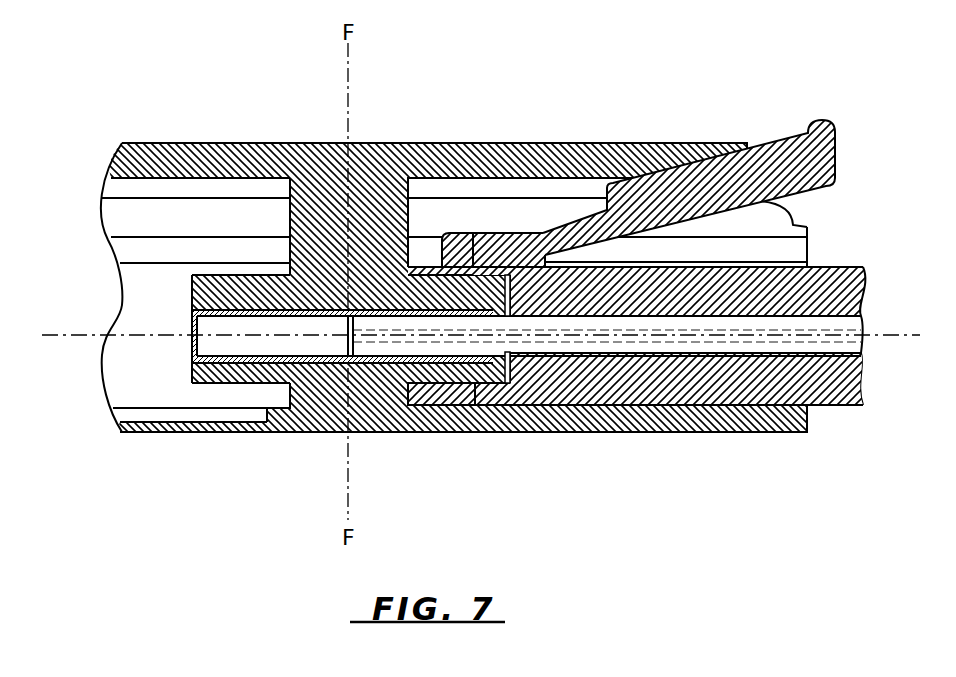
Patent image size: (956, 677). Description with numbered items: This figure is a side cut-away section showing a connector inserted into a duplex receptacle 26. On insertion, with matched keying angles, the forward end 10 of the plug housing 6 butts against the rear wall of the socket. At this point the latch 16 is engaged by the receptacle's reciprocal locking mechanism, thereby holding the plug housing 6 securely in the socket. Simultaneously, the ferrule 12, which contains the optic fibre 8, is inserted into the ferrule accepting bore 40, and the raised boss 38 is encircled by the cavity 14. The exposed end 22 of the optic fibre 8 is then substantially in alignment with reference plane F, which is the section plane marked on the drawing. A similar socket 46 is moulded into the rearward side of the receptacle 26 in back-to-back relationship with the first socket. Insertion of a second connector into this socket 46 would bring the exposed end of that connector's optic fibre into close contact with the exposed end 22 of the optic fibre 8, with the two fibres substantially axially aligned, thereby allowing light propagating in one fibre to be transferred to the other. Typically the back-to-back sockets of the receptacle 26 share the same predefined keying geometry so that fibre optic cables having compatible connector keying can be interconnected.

The plug housing 6 is at (777, 377).
The optic fibre 8 is at (860, 298).
The forward end 10 is at (408, 383).
The ferrule 12 is at (850, 347).
The cavity 14 is at (477, 383).
The latch 16 is at (763, 165).
The exposed end 22 is at (305, 143).
The duplex receptacle 26 is at (305, 460).
The raised boss 38 is at (473, 233).
The ferrule accepting bore 40 is at (347, 331).
The socket 46 is at (140, 310).